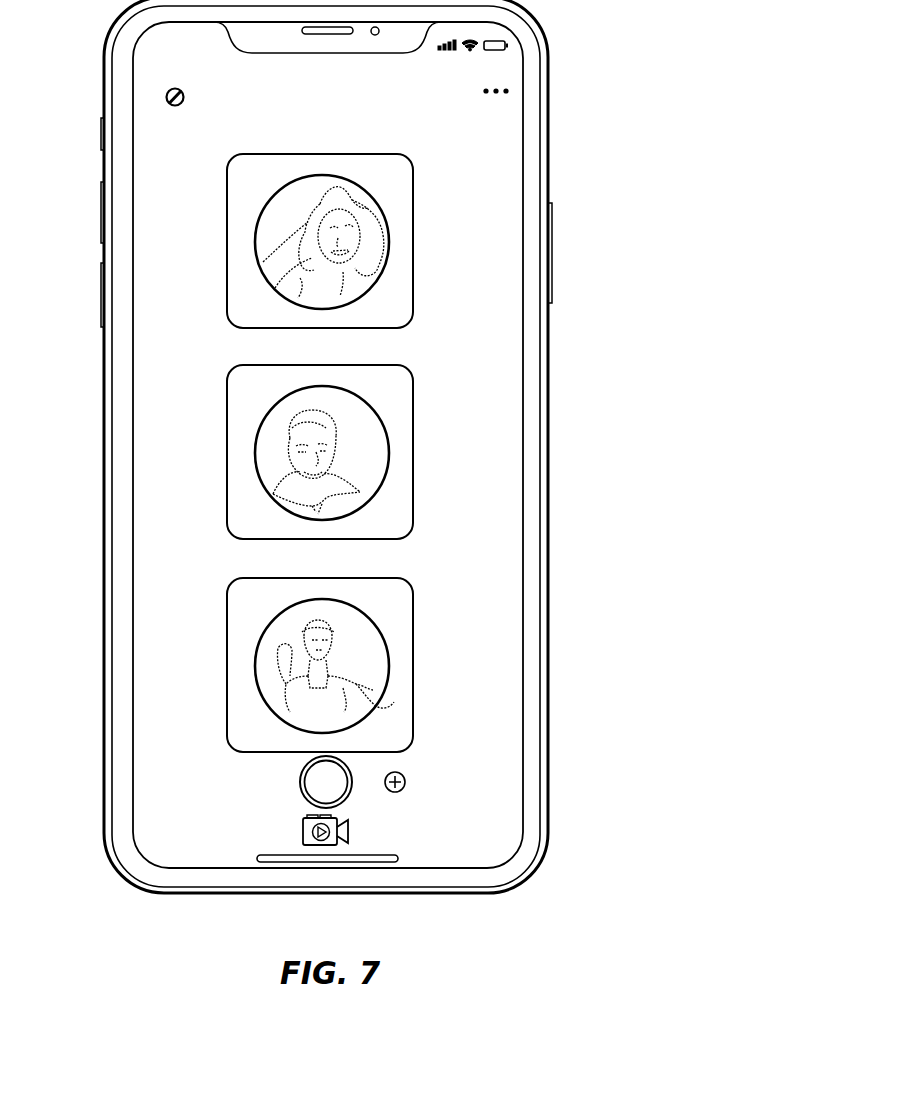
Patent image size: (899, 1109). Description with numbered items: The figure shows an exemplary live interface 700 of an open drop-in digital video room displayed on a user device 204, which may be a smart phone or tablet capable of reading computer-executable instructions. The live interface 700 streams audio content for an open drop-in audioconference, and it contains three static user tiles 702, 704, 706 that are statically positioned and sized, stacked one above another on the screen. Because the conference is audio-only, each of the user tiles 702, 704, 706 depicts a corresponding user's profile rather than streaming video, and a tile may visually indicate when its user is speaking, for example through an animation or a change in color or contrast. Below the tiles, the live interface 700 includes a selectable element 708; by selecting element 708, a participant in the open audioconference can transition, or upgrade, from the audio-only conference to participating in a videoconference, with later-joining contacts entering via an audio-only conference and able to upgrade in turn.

The user device 204 is at (104, 88).
The live interface 700 is at (133, 122).
The static user tile 702 is at (285, 580).
The static user tile 704 is at (285, 367).
The static user tile 706 is at (285, 156).
The element 708 is at (357, 830).